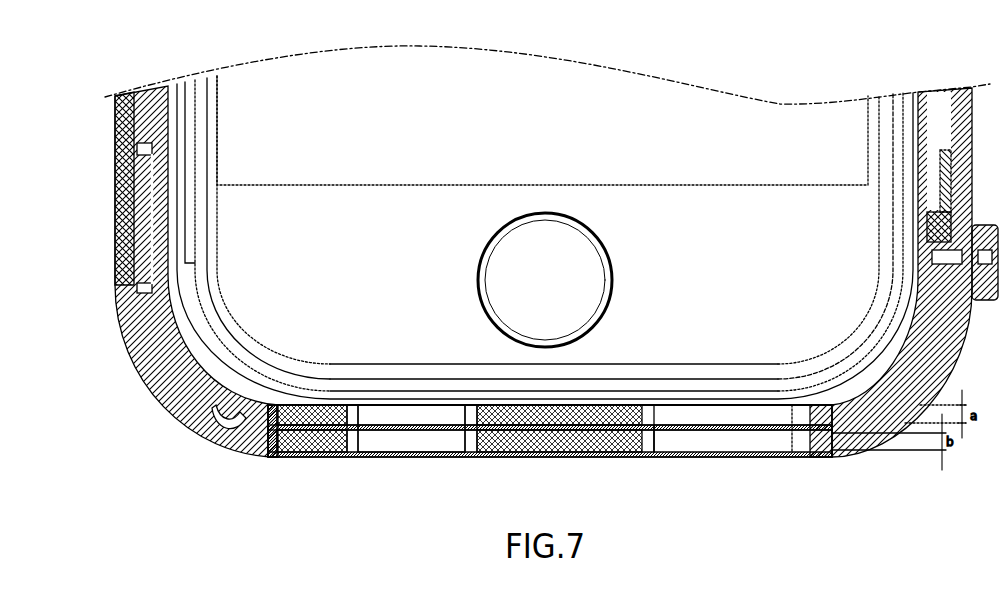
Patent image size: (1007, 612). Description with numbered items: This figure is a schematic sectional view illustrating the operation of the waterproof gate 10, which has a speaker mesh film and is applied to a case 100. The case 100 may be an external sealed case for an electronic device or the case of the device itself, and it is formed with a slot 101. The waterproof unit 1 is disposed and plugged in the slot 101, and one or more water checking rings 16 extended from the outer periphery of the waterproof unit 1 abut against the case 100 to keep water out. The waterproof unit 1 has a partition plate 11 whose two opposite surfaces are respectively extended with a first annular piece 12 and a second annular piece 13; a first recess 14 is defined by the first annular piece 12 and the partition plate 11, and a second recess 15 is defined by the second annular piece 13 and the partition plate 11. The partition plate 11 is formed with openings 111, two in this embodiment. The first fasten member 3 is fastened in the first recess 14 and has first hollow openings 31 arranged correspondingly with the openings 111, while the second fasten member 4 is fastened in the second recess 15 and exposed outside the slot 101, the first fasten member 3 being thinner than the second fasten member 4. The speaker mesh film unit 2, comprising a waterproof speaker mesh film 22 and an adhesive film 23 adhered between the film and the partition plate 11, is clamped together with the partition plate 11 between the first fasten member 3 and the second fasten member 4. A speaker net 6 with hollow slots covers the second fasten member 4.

The waterproof unit 1 is at (252, 461).
The slot 101 is at (206, 433).
The waterproof gate 10 is at (708, 470).
The case 100 is at (978, 114).
The water checking ring 16 is at (238, 388).
The first annular piece 12 is at (277, 406).
The first fasten member 3 is at (510, 404).
The first hollow opening 31 is at (660, 404).
The first recess 14 is at (290, 403).
The second annular piece 13 is at (268, 460).
The second recess 15 is at (290, 458).
The speaker mesh film unit 2 is at (377, 472).
The waterproof speaker mesh film 22 is at (422, 434).
The adhesive film 23 is at (330, 458).
The second fasten member 4 is at (503, 448).
The speaker net 6 is at (553, 458).
The partition plate 11 is at (537, 458).
The opening 111 is at (656, 432).